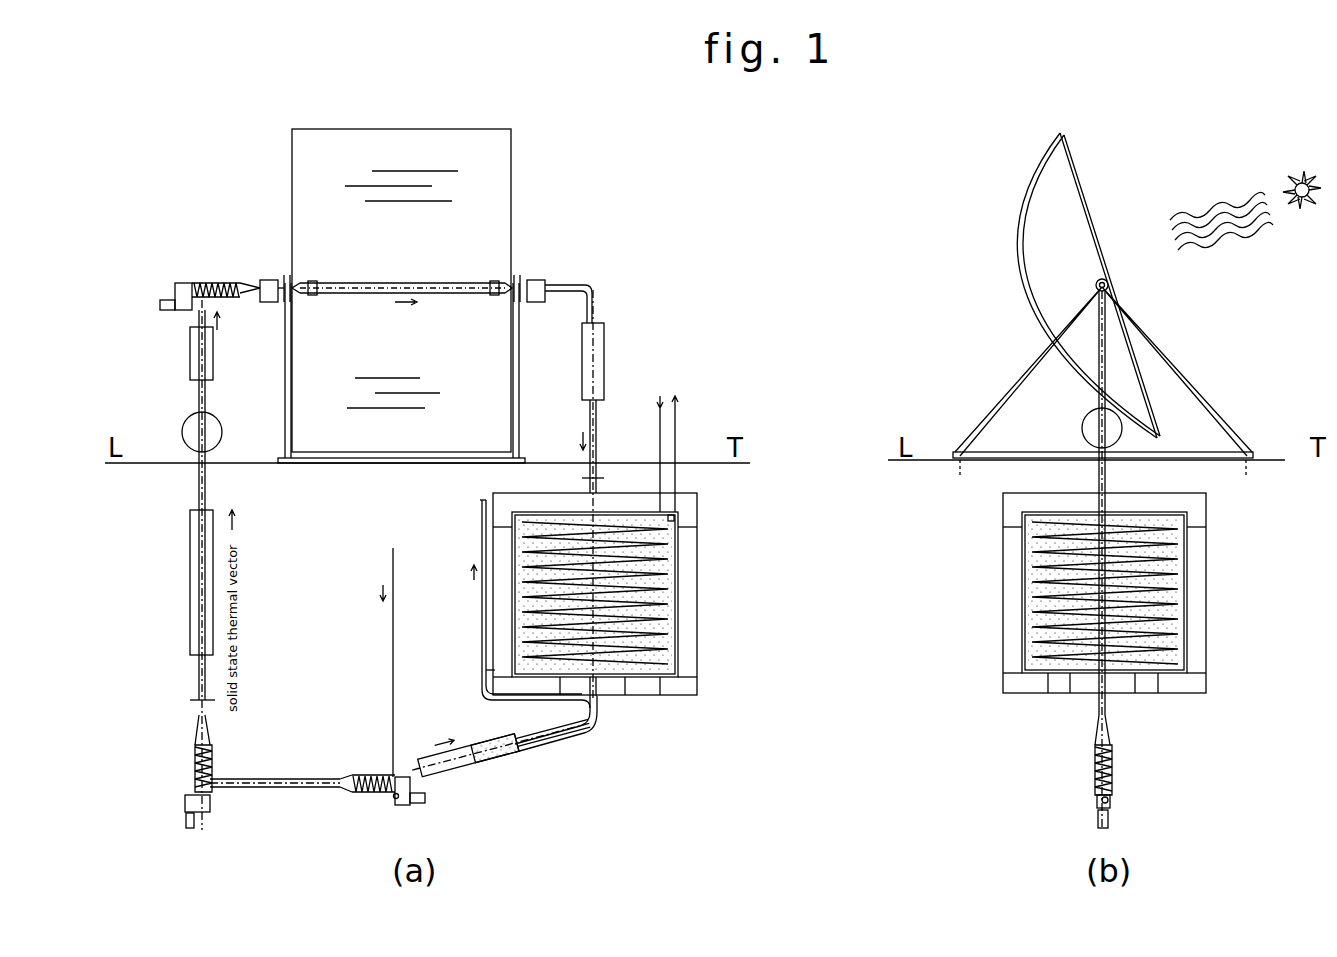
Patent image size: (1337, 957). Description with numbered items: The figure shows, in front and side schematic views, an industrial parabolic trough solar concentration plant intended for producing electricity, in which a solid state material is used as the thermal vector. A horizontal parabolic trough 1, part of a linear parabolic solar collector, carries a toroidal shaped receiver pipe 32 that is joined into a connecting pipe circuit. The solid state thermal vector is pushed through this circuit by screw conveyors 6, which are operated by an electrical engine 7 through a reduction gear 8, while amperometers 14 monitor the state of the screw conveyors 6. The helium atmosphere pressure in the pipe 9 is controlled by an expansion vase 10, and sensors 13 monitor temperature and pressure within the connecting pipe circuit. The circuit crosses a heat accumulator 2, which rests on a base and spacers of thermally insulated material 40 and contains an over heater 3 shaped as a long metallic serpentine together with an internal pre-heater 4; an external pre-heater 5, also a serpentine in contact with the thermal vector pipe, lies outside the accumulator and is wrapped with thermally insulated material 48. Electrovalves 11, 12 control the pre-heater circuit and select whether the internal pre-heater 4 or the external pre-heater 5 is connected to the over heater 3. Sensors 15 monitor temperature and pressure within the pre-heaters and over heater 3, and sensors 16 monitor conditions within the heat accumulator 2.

The horizontal parabolic trough 1 is at (512, 140).
The heat accumulator 2 is at (715, 555).
The over heater 3 is at (665, 612).
The internal pre-heater 4 is at (675, 665).
The external pre-heater 5 is at (568, 733).
The screw conveyor 6 is at (370, 776).
The electrical engine 7 is at (425, 795).
The reduction gear 8 is at (410, 800).
The pipe 9 is at (290, 787).
The expansion vase 10 is at (222, 428).
The electrovalve 11 is at (488, 510).
The electrovalve 12 is at (490, 672).
The sensor 13 is at (262, 280).
The amperometer 14 is at (394, 798).
The sensor 15 is at (660, 512).
The sensor 16 is at (675, 515).
The toroidal shaped receiver pipe 32 is at (445, 283).
The base and spacers of thermally insulated material 40 is at (643, 688).
The thermally insulated material 48 is at (482, 760).